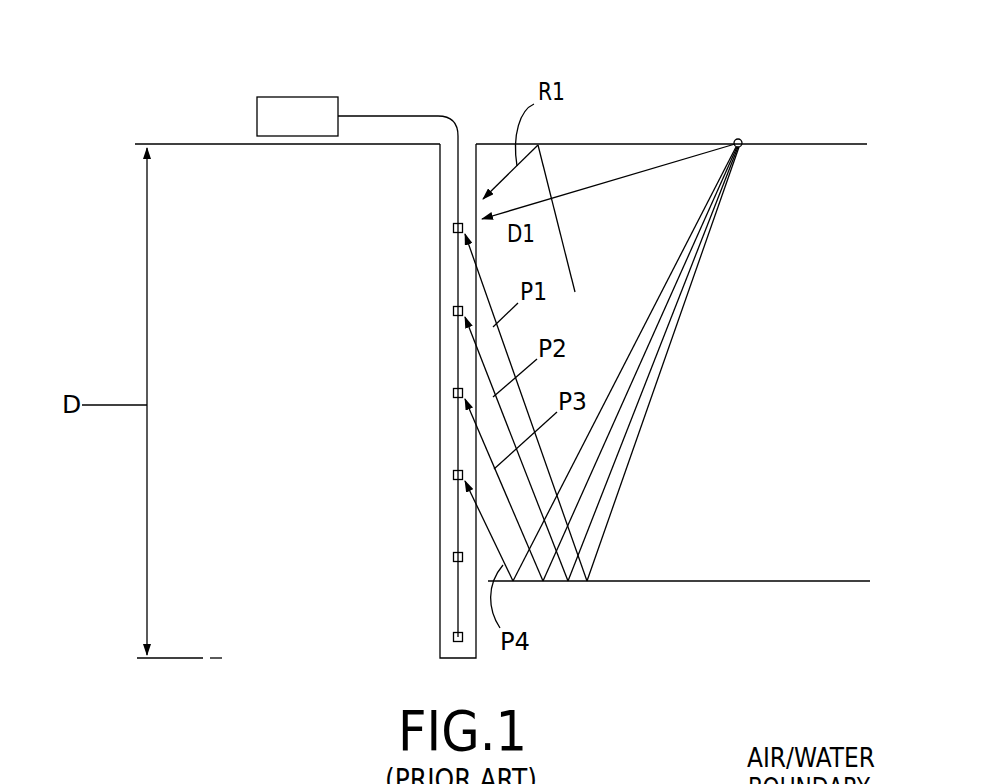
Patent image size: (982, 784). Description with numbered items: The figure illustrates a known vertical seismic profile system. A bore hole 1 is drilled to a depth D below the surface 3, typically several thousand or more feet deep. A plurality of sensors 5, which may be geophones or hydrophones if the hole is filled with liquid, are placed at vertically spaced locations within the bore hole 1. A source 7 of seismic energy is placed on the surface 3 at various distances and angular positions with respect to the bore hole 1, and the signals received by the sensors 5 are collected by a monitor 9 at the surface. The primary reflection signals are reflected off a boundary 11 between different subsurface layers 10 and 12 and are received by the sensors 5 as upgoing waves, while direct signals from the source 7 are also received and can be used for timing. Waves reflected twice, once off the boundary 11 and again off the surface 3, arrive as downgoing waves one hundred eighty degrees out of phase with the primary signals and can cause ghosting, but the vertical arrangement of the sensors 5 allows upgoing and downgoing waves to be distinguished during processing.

The bore hole 1 is at (473, 137).
The surface 3 is at (190, 143).
The sensors 5 is at (454, 557).
The source 7 is at (741, 139).
The monitor 9 is at (298, 108).
The subsurface layer 10 is at (865, 377).
The boundary 11 is at (721, 580).
The subsurface layer 12 is at (865, 653).